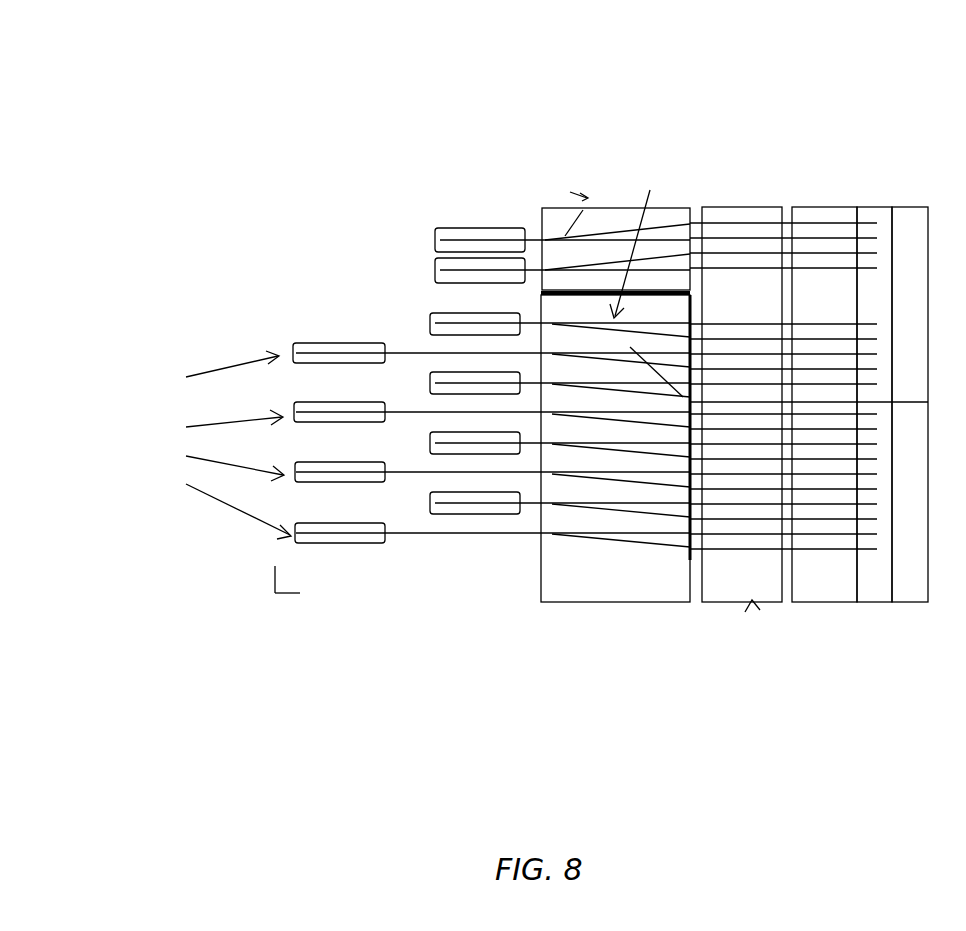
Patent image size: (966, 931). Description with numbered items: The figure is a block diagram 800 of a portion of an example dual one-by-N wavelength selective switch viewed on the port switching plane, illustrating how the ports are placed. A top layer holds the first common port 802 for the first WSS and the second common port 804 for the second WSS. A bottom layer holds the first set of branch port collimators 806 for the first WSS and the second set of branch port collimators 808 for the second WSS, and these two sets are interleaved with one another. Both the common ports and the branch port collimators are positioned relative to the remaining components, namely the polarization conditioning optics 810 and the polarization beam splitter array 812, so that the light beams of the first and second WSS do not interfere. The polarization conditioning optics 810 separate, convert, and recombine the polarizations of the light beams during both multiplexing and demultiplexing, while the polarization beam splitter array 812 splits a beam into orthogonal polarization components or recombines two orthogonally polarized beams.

The block diagram 800 is at (99, 82).
The first common port 802 is at (425, 228).
The second common port 804 is at (420, 271).
The first set of branch port collimators 806 is at (462, 338).
The second set of branch port collimators 808 is at (163, 441).
The polarization conditioning optics 810 is at (564, 170).
The polarization beam splitter array 812 is at (746, 180).